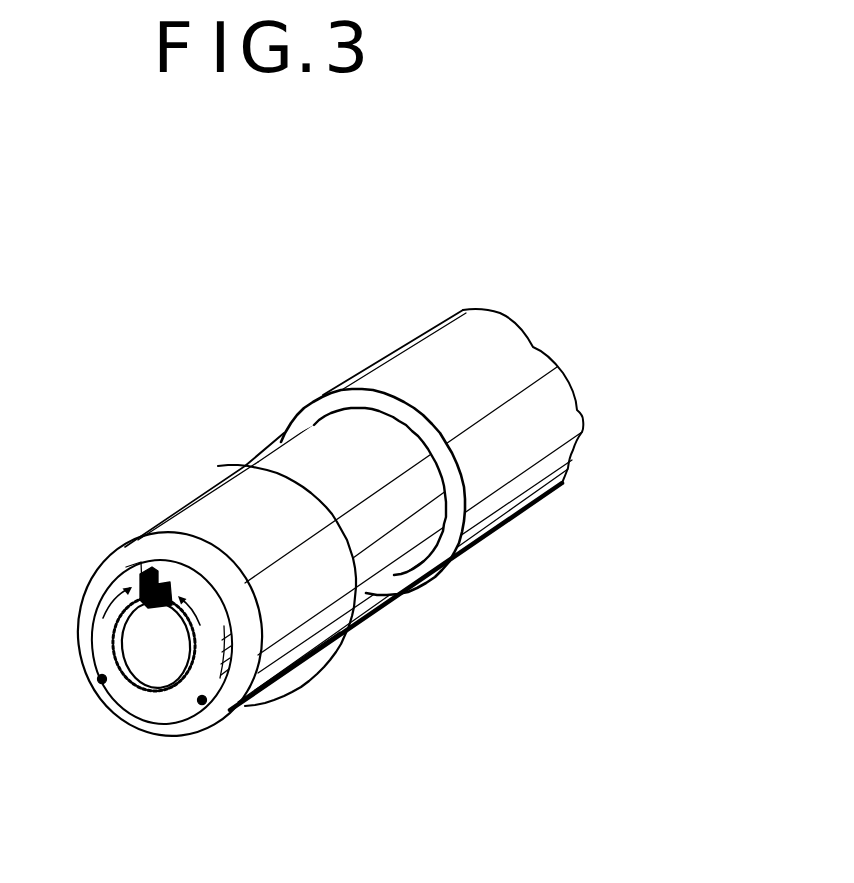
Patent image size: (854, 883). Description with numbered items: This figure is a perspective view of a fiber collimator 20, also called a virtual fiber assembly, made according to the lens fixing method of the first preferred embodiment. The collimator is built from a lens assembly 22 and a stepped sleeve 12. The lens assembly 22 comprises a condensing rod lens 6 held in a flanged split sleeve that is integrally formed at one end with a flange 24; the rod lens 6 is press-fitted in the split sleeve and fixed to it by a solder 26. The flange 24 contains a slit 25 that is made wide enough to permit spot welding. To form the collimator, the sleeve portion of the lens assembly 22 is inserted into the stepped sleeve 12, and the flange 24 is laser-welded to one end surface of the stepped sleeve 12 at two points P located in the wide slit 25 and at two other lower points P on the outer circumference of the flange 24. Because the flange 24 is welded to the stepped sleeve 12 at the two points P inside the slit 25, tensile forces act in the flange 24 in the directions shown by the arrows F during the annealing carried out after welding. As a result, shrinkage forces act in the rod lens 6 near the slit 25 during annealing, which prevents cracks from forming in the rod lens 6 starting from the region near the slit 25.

The fiber collimator 20 is at (253, 442).
The stepped sleeve 12 is at (328, 641).
The lens assembly 22 is at (101, 584).
The flange 24 is at (213, 672).
The slit 25 is at (172, 560).
The solder 26 is at (143, 668).
The condensing rod lens 6 is at (162, 672).
The welding points P is at (157, 568).
The arrows indicating tensile force directions F is at (152, 620).